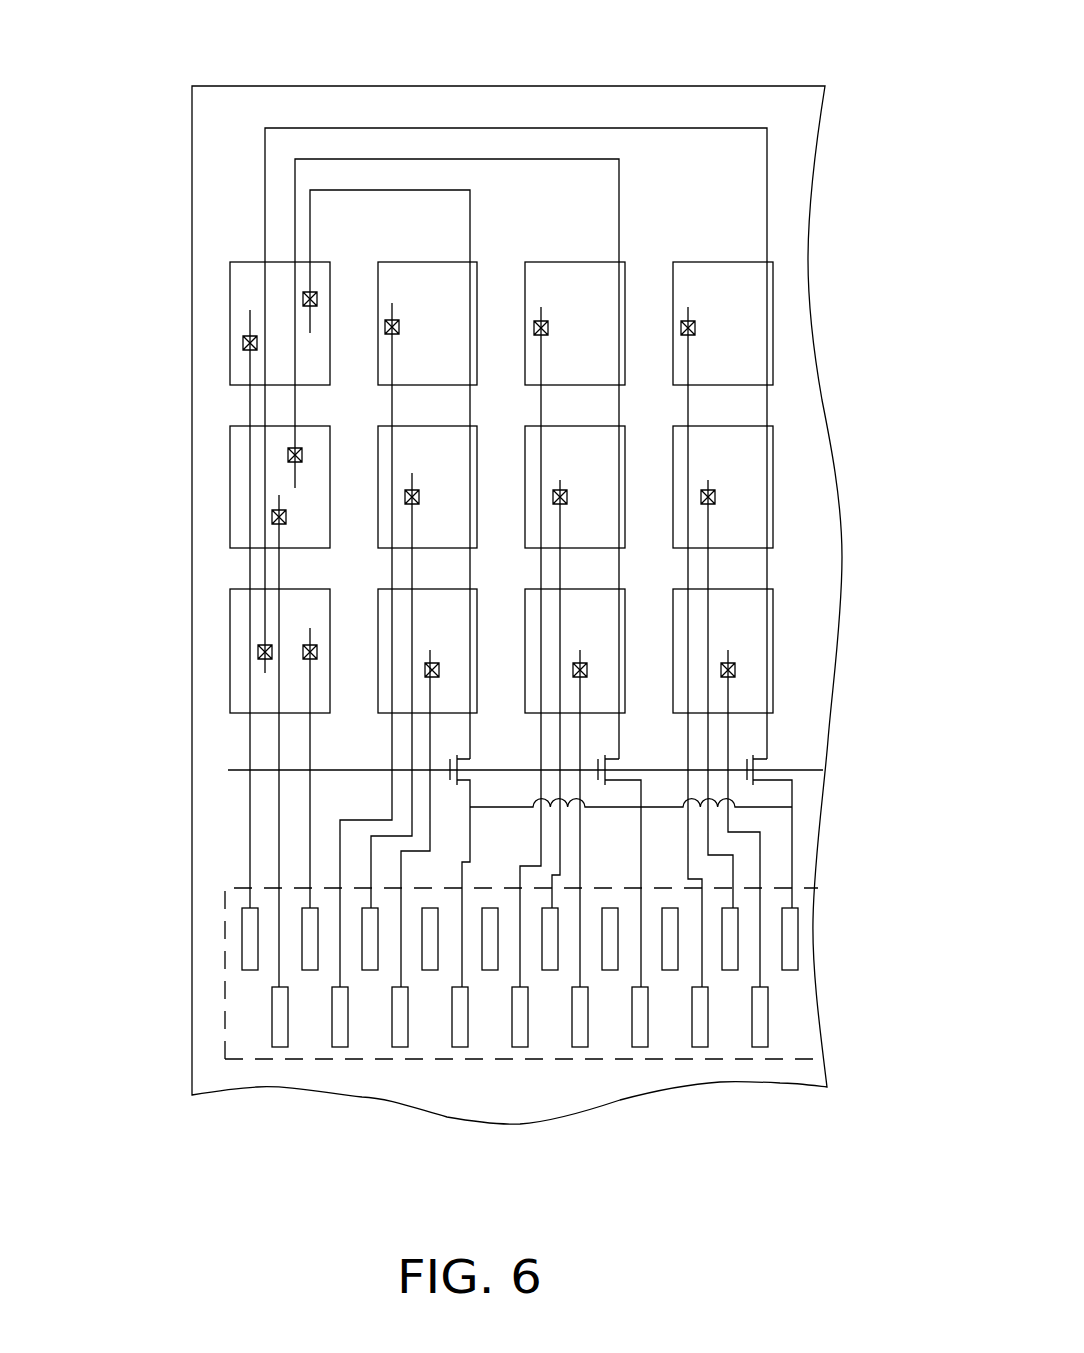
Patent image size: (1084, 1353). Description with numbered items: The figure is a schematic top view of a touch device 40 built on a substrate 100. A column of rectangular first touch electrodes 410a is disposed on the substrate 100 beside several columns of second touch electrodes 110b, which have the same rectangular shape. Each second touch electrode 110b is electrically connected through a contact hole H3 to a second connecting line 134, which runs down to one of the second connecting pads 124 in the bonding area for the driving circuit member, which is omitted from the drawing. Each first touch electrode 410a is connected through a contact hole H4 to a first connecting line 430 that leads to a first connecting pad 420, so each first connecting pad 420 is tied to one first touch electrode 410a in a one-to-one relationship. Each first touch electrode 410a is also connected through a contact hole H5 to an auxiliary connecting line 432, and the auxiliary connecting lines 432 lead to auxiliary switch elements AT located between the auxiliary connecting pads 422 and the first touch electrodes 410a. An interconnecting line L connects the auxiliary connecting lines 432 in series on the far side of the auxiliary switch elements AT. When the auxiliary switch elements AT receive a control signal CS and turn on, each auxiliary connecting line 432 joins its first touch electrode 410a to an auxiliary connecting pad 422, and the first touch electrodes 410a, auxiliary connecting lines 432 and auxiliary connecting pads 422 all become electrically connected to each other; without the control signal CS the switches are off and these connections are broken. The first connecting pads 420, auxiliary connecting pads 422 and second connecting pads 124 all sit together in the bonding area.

The substrate 100 is at (202, 183).
The auxiliary connecting lines 432 is at (407, 190).
The first touch electrodes 410a is at (247, 268).
The second touch electrodes 110b is at (567, 267).
The contact hole H3 is at (399, 327).
The contact hole H4 is at (242, 343).
The contact hole H5 is at (302, 299).
The first connecting lines 430 is at (249, 370).
The second connecting lines 134 is at (390, 394).
The control signal CS is at (510, 774).
The auxiliary switch elements AT is at (627, 860).
The interconnecting line L is at (773, 808).
The first connecting pads 420 is at (272, 1008).
The auxiliary connecting pads 422 is at (802, 940).
The second connecting pads 124 is at (370, 970).
The touch device 40 is at (840, 1178).